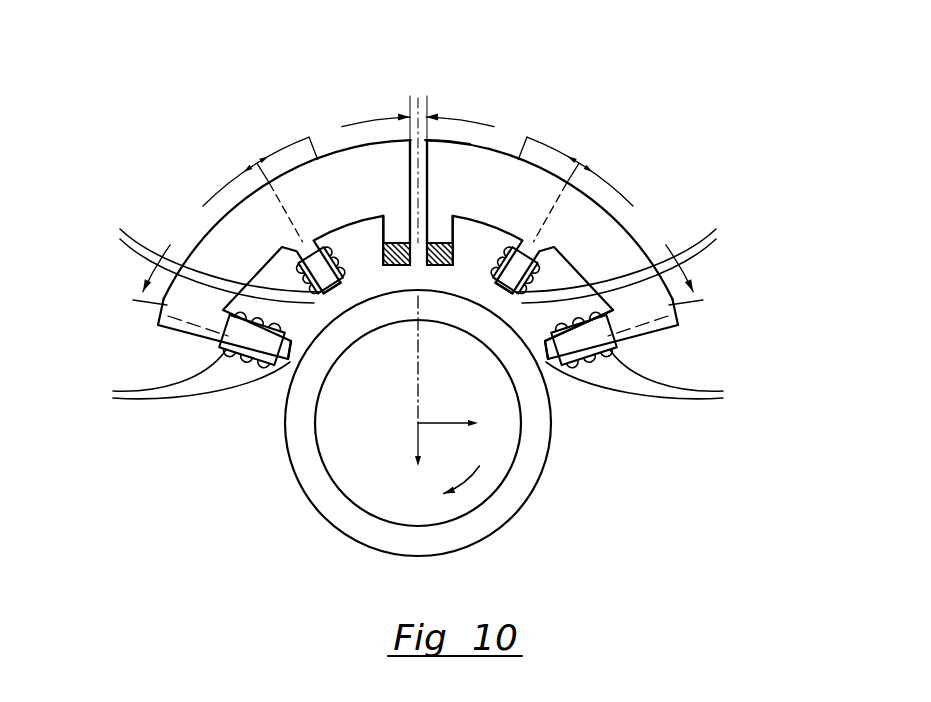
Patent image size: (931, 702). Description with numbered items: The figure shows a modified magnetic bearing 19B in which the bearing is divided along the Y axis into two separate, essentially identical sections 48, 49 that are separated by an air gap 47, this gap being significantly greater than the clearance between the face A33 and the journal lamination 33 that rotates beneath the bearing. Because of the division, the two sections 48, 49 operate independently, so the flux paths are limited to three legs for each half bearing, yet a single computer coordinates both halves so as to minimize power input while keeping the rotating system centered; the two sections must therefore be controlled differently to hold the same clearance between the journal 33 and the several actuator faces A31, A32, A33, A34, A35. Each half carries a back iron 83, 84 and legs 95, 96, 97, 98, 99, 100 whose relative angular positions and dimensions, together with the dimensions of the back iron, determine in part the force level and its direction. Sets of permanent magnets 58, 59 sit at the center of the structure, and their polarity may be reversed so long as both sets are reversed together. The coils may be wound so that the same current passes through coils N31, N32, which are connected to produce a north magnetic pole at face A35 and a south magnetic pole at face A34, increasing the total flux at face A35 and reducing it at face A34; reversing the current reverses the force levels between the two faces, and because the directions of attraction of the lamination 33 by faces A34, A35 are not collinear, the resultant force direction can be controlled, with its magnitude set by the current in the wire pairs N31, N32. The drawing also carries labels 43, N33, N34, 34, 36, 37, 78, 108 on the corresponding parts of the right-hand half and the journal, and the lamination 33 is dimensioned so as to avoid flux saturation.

The air gap 47 is at (417, 93).
The magnetic bearing 19B is at (443, 138).
The back iron 83 is at (357, 165).
The back iron 84 is at (530, 137).
The section 48 is at (262, 150).
The section 49 is at (580, 153).
The angular extent line 43 is at (620, 188).
The coil N32 is at (191, 260).
The winding lead N33 is at (647, 260).
The coil N31 is at (174, 374).
The winding lead N34 is at (667, 374).
The stator pole 34 is at (295, 240).
The stator pole 36 is at (541, 240).
The permanent magnets 58 is at (383, 248).
The permanent magnets 59 is at (453, 249).
The leg 97 is at (412, 226).
The leg 98 is at (452, 213).
The leg 99 is at (503, 232).
The leg 96 is at (336, 287).
The face A34 is at (314, 294).
The face A33 is at (433, 290).
The actuator face A32 is at (514, 296).
The face A35 is at (293, 368).
The actuator face A31 is at (560, 375).
The journal lamination 33 is at (214, 352).
The stator end pole 37 is at (612, 344).
The leg 100 is at (660, 322).
The rotor 78 is at (383, 440).
The leg 95 is at (296, 392).
The pole tip 108 is at (553, 385).